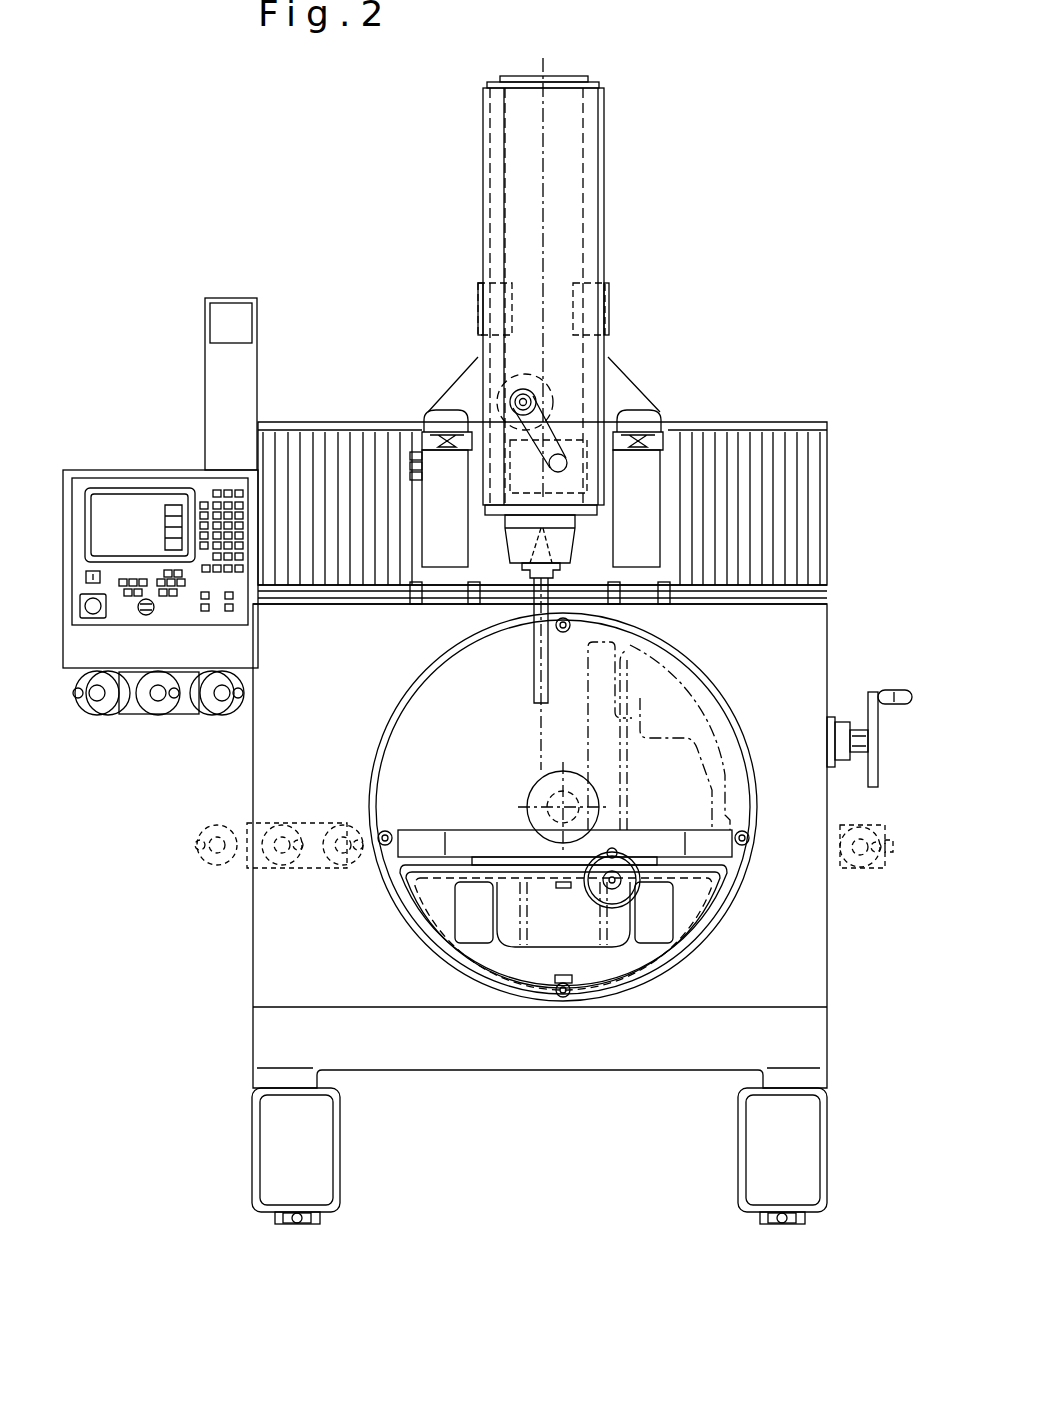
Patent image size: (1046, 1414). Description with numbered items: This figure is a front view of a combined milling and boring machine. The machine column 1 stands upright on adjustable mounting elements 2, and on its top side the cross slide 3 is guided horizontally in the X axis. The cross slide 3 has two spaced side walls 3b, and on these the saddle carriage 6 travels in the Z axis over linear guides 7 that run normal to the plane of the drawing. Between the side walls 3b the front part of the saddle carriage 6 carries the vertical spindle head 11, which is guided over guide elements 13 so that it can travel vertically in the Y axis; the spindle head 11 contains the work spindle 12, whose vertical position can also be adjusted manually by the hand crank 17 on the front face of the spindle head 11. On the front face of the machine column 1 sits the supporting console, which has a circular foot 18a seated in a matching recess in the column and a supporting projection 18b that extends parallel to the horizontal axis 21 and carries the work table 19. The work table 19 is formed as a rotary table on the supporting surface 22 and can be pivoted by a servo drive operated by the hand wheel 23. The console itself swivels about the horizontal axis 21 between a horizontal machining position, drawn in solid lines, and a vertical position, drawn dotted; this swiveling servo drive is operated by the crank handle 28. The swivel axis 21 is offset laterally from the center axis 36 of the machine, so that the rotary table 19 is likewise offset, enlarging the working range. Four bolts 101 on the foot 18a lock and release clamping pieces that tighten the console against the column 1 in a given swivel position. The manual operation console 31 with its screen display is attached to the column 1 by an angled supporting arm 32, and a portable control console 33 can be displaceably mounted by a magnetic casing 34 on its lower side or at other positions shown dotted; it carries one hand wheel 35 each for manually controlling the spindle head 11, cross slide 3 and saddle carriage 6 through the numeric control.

The machine column 1 is at (790, 920).
The adjustable mounting elements 2 is at (275, 1222).
The cross slide 3 is at (503, 570).
The side walls 3b is at (448, 560).
The saddle carriage 6 is at (463, 400).
The linear guides 7 is at (440, 435).
The spindle head 11 is at (520, 143).
The work spindle 12 is at (518, 543).
The guide elements 13 is at (598, 275).
The hand crank 17 is at (548, 438).
The circular foot 18a is at (410, 718).
The supporting projection 18b is at (500, 912).
The work table 19 is at (470, 840).
The horizontal axis 21 is at (573, 800).
The supporting surface 22 is at (640, 845).
The hand wheel 23 is at (640, 895).
The crank handle 28 is at (873, 692).
The manual operation console 31 is at (108, 480).
The angled supporting arm 32 is at (213, 370).
The portable control console 33 is at (107, 722).
The magnetic casing 34 is at (190, 720).
The hand wheel 35 is at (160, 718).
The center axis 36 is at (540, 730).
The bolts 101 is at (745, 838).